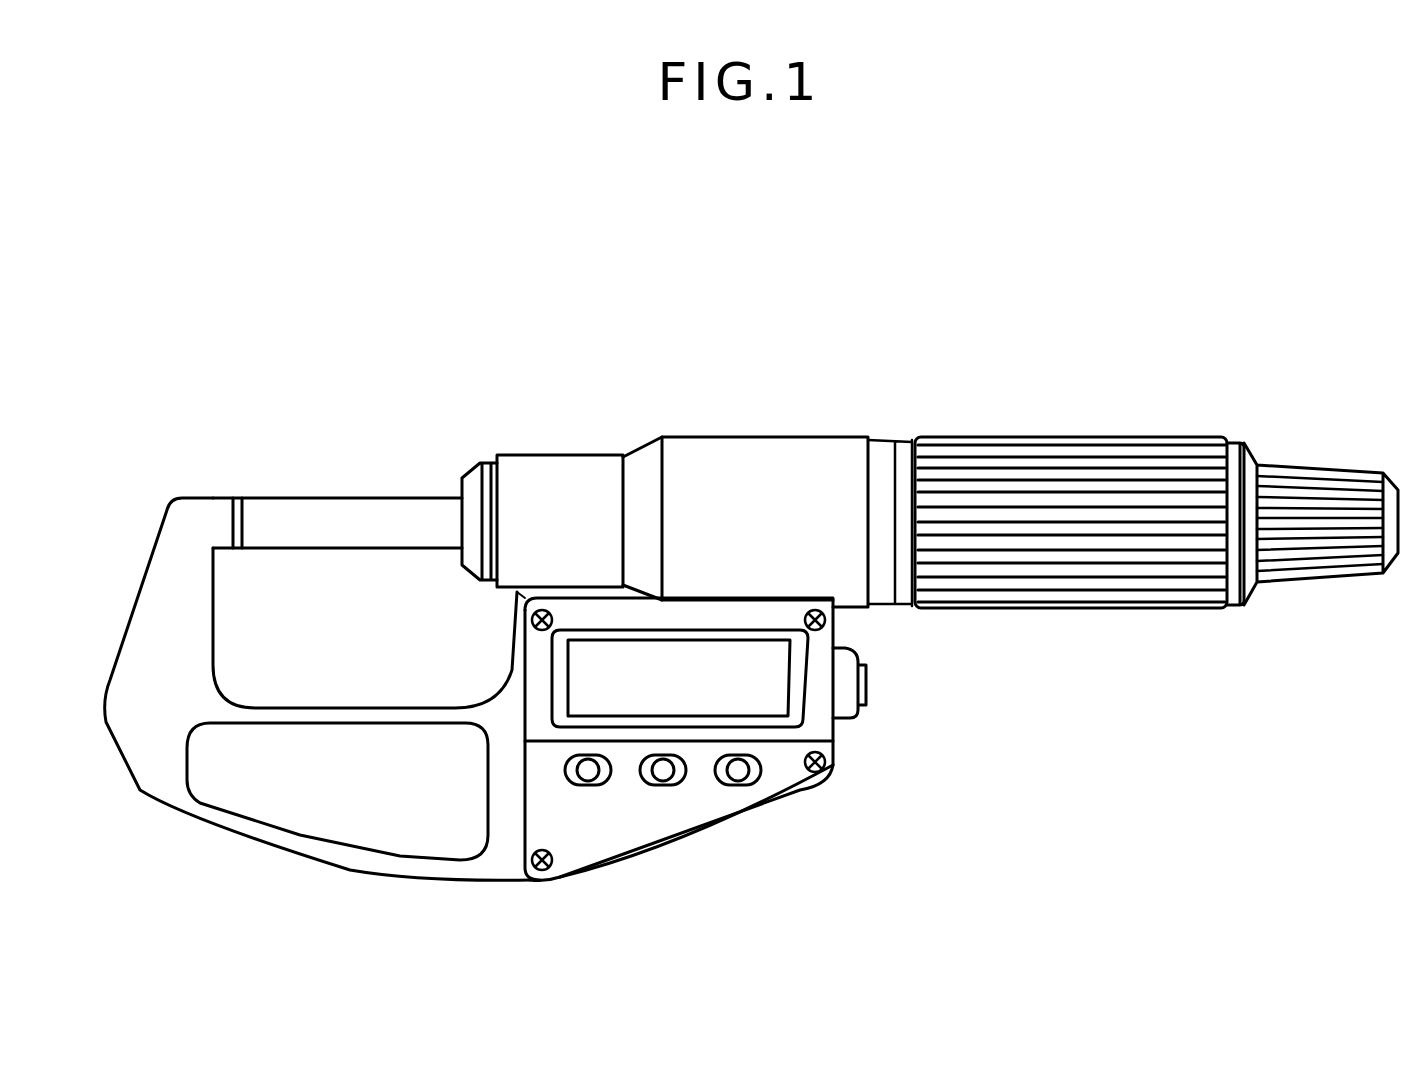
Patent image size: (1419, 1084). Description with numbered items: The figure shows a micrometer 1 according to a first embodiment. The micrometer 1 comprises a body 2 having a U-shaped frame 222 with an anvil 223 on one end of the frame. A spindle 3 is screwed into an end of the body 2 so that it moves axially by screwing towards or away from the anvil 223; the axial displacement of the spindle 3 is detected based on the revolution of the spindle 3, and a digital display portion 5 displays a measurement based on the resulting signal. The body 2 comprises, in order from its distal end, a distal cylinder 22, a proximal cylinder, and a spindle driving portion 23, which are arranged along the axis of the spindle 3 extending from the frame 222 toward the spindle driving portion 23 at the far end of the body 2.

The micrometer 1 is at (1005, 304).
The body 2 is at (795, 405).
The distal cylinder 22 is at (564, 473).
The spindle driving portion 23 is at (1112, 406).
The spindle 3 is at (346, 510).
The anvil 223 is at (222, 510).
The U-shaped frame 222 is at (505, 858).
The digital display portion 5 is at (755, 690).